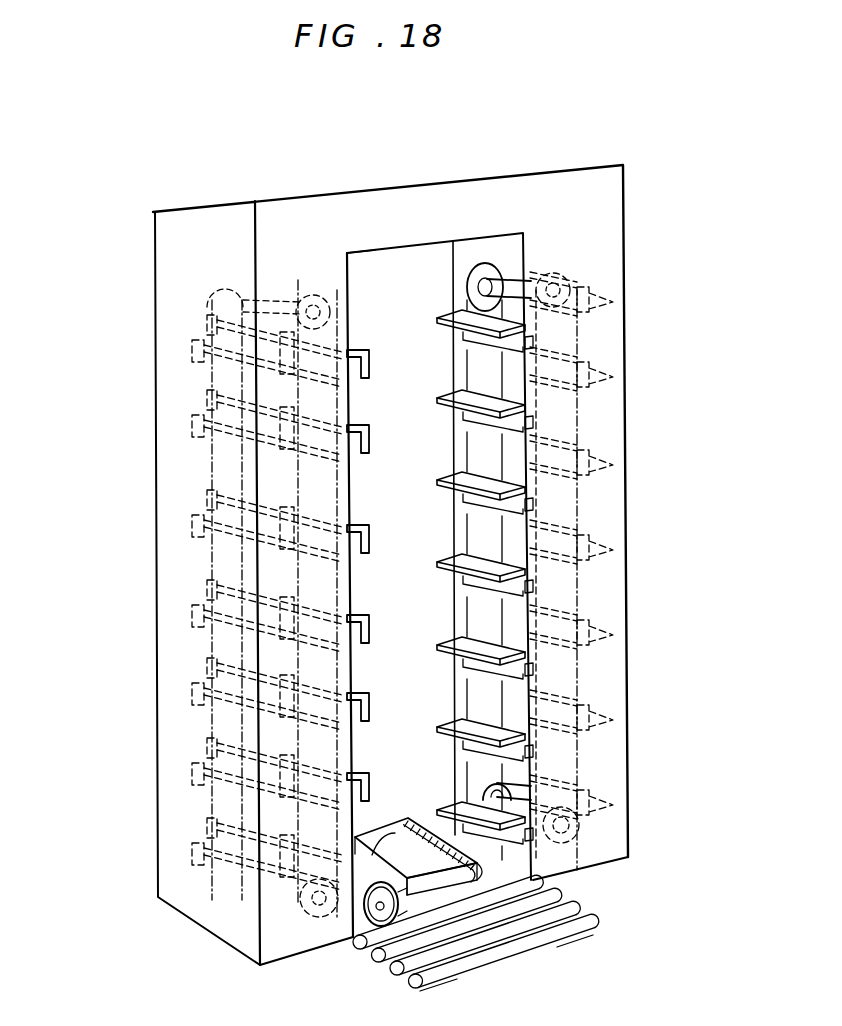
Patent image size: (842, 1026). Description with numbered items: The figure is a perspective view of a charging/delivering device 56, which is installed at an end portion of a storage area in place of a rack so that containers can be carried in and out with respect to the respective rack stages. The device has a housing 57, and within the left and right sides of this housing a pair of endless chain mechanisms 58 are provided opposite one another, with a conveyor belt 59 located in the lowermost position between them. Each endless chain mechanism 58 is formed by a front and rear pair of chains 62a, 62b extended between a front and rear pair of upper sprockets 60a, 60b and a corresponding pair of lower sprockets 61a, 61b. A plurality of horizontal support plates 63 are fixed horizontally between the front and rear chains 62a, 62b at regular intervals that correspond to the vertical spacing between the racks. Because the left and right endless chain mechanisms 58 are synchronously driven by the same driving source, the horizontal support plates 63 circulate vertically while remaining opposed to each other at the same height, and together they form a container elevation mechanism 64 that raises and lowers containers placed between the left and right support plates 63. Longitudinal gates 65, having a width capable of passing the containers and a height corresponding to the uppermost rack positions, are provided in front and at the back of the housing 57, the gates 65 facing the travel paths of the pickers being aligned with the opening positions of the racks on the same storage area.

The charging/delivering device 56 is at (294, 192).
The housing 57 is at (165, 269).
The endless chain mechanism 58 is at (166, 578).
The conveyor belt 59 is at (386, 812).
The upper sprocket 60a is at (487, 262).
The upper sprocket 60b is at (568, 279).
The lower sprocket 61a is at (484, 782).
The lower sprocket 61b is at (582, 836).
The chain 62a is at (356, 524).
The chain 62b is at (353, 470).
The horizontal support plate 63 is at (365, 352).
The container elevation mechanism 64 is at (430, 266).
The longitudinal gate 65 is at (380, 252).